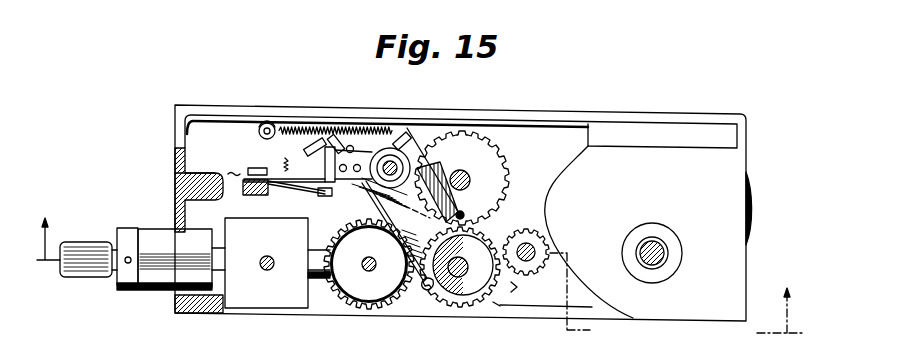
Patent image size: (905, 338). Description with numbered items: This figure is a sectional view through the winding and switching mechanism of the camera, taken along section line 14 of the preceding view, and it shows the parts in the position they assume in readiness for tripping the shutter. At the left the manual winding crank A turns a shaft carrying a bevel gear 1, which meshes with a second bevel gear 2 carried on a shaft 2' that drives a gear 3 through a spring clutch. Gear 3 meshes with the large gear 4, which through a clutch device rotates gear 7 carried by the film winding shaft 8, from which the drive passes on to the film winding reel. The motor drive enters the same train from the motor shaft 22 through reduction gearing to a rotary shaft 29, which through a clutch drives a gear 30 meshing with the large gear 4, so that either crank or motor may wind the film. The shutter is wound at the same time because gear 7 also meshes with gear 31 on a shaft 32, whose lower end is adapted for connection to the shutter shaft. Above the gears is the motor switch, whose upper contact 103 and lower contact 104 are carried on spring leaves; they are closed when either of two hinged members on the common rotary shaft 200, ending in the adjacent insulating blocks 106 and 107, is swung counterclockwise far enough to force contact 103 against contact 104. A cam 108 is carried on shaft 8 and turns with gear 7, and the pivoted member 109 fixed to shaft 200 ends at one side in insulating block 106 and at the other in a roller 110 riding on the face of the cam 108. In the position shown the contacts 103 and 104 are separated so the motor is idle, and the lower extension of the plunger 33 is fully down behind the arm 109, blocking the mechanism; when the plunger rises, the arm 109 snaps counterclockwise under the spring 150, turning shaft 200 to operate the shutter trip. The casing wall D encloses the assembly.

The bevel gear 1 is at (318, 262).
The bevel gear 2 is at (369, 264).
The shaft 2' is at (357, 273).
The gear 3 is at (350, 218).
The gear 4 is at (510, 292).
The gear 7 is at (497, 307).
The shaft 8 is at (463, 259).
The key 14 is at (428, 266).
The motor shaft 22 is at (667, 254).
The rotary shaft 29 is at (533, 247).
The gear 30 is at (548, 243).
The gear 31 is at (485, 145).
The shaft 32 is at (462, 175).
The plunger 33 is at (460, 215).
The upper contact 103 is at (278, 173).
The lower contact 104 is at (320, 194).
The insulating block 106 is at (332, 142).
The insulating block 107 is at (370, 147).
The cam 108 is at (460, 308).
The pivoted member 109 is at (402, 224).
The roller 110 is at (428, 284).
The spring 150 is at (293, 124).
The rotary shaft 200 is at (395, 165).
The crank A is at (112, 278).
The housing wall D is at (175, 187).